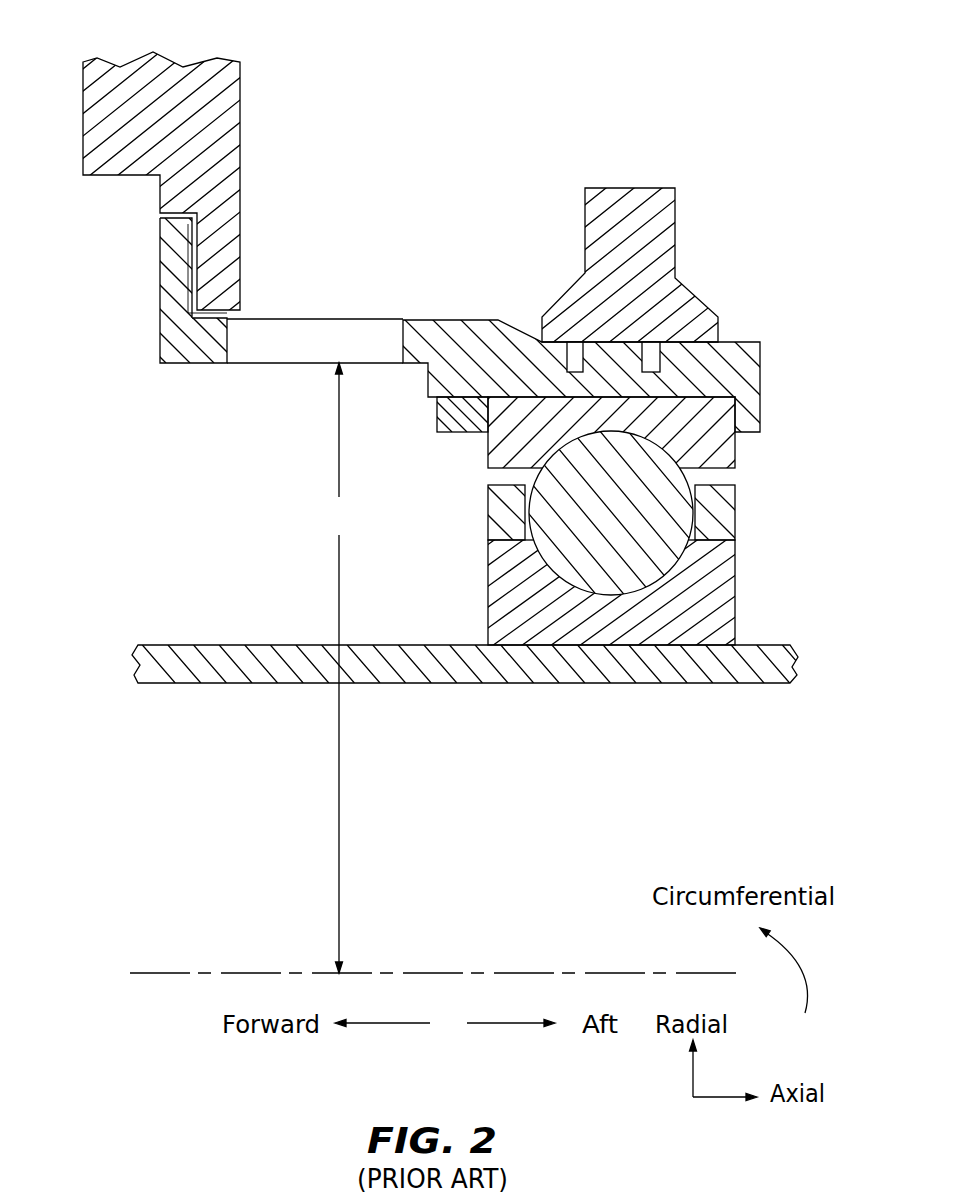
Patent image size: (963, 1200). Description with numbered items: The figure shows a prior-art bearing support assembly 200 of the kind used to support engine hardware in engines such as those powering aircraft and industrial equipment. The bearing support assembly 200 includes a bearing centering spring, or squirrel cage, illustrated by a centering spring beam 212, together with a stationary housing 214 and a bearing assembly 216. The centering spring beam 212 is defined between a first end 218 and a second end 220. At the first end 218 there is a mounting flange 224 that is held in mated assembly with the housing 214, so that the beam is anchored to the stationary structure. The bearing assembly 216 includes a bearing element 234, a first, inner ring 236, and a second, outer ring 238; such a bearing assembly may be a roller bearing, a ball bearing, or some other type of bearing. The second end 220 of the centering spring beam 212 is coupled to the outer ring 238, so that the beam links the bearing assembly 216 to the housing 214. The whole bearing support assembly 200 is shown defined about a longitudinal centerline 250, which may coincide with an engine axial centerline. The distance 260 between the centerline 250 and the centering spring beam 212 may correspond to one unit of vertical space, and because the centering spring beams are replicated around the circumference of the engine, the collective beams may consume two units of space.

The bearing support assembly 200 is at (740, 190).
The centering spring beam 212 is at (297, 382).
The stationary housing 214 is at (105, 103).
The bearing assembly 216 is at (481, 370).
The first end 218 is at (183, 358).
The second end 220 is at (453, 330).
The mounting flange 224 is at (177, 237).
The bearing element 234 is at (668, 507).
The first ring 236 is at (693, 593).
The second ring 238 is at (708, 443).
The longitudinal centerline 250 is at (150, 970).
The distance 260 is at (340, 668).